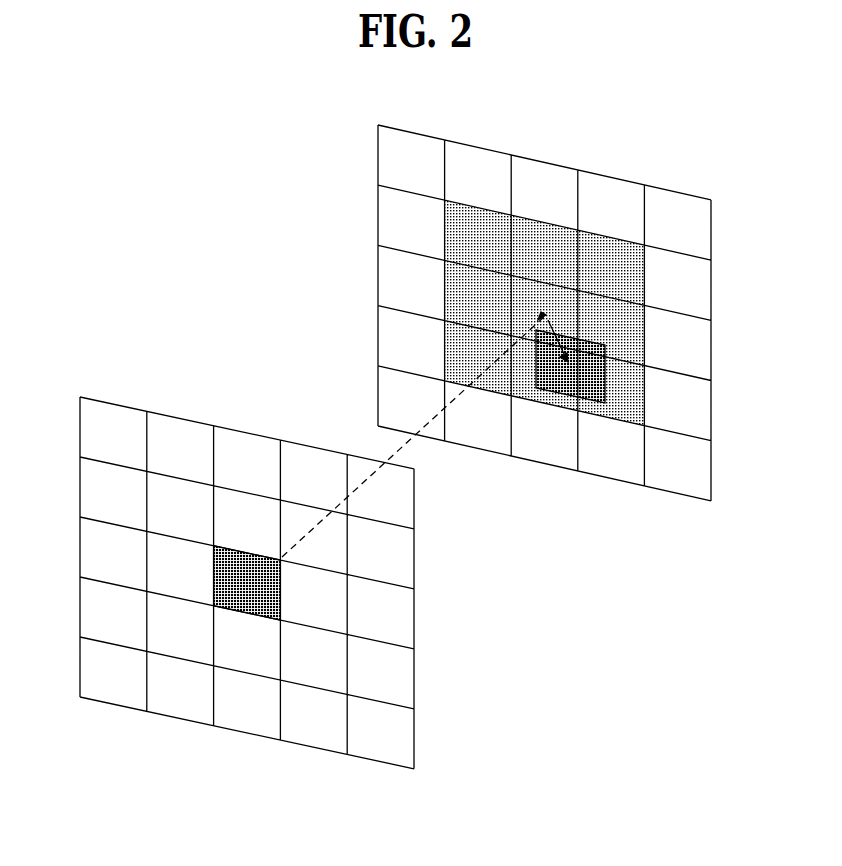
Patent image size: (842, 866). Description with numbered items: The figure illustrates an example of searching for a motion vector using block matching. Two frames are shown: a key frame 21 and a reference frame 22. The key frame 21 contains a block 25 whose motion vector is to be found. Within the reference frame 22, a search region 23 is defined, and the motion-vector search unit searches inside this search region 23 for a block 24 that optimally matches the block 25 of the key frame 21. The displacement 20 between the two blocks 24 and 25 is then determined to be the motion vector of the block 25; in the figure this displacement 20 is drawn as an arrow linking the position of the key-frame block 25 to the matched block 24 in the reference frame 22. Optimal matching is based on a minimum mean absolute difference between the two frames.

The displacement 20 is at (552, 322).
The key frame 21 is at (167, 412).
The reference frame 22 is at (471, 145).
The search region 23 is at (437, 290).
The block 24 is at (613, 382).
The block 25 is at (284, 600).